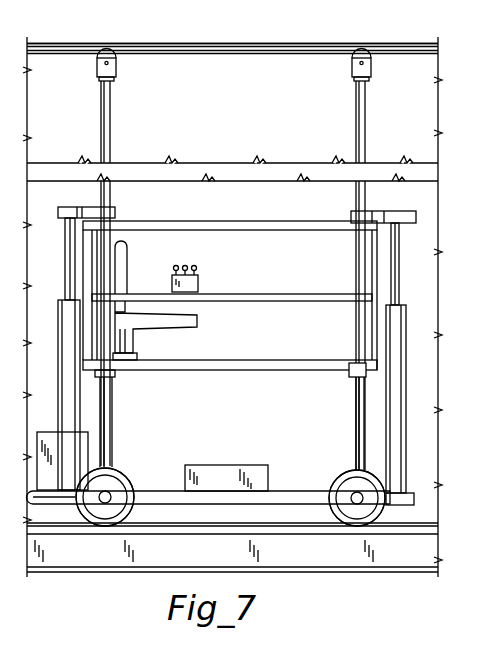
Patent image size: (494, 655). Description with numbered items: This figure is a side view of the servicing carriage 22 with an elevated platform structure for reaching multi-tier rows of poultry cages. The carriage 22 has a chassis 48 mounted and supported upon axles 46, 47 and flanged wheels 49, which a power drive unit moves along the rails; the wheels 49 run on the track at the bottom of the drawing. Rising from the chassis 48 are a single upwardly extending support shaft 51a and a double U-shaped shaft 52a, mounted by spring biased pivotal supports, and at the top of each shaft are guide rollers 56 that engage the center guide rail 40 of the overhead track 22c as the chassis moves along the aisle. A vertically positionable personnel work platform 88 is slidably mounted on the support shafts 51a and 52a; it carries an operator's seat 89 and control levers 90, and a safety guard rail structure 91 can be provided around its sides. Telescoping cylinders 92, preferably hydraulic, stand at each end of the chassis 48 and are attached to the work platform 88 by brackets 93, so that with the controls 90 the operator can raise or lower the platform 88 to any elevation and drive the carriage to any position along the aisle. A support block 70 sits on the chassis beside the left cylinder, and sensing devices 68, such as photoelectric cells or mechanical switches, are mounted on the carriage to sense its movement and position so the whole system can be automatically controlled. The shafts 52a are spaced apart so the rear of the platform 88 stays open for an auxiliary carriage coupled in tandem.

The carriage 22 is at (330, 392).
The overhead track 22c is at (388, 40).
The center guide rail 40 is at (257, 66).
The axle 46 is at (107, 494).
The axle 47 is at (355, 495).
The chassis 48 is at (281, 498).
The flanged wheels 49 is at (127, 514).
The support shaft 51a is at (111, 129).
The double U-shaped shaft 52a is at (358, 128).
The guide rollers 56 is at (116, 69).
The sensing devices 68 is at (417, 493).
The support block 70 is at (45, 450).
The work platform 88 is at (248, 368).
The operator's seat 89 is at (198, 318).
The control levers 90 is at (200, 277).
The safety guard rail structure 91 is at (277, 297).
The telescoping cylinders 92 is at (63, 397).
The brackets 93 is at (115, 212).